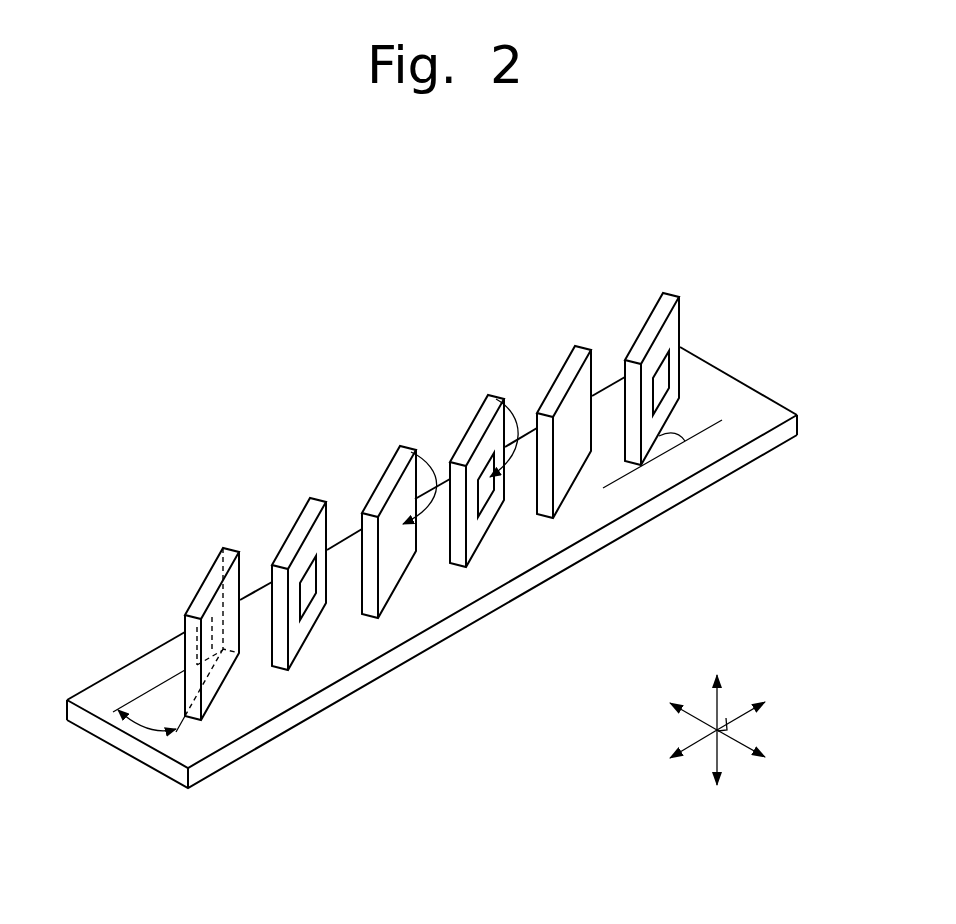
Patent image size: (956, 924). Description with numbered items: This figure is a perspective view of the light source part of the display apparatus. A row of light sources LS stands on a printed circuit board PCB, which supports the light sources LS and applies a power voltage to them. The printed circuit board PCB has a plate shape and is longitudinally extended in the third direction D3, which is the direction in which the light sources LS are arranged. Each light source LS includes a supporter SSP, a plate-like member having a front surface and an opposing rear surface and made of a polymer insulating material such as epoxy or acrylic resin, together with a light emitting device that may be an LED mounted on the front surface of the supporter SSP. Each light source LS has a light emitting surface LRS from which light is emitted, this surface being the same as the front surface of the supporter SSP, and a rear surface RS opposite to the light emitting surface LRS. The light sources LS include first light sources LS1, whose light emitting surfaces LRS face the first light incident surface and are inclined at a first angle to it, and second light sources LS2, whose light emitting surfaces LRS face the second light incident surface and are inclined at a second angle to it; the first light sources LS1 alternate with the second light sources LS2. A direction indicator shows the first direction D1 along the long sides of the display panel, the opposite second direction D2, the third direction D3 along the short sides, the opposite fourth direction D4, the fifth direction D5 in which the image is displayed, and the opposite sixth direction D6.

The printed circuit board PCB is at (767, 417).
The light sources LS is at (238, 569).
The first light sources LS1 is at (213, 577).
The second light sources LS2 is at (284, 560).
The rear surface RS is at (412, 452).
The light emitting surface LRS is at (492, 398).
The supporter SSP is at (691, 378).
The element LED is at (661, 378).
The first direction D1 is at (677, 708).
The second direction D2 is at (755, 749).
The third direction D3 is at (755, 708).
The fourth direction D4 is at (677, 749).
The fifth direction D5 is at (716, 688).
The sixth direction D6 is at (716, 771).